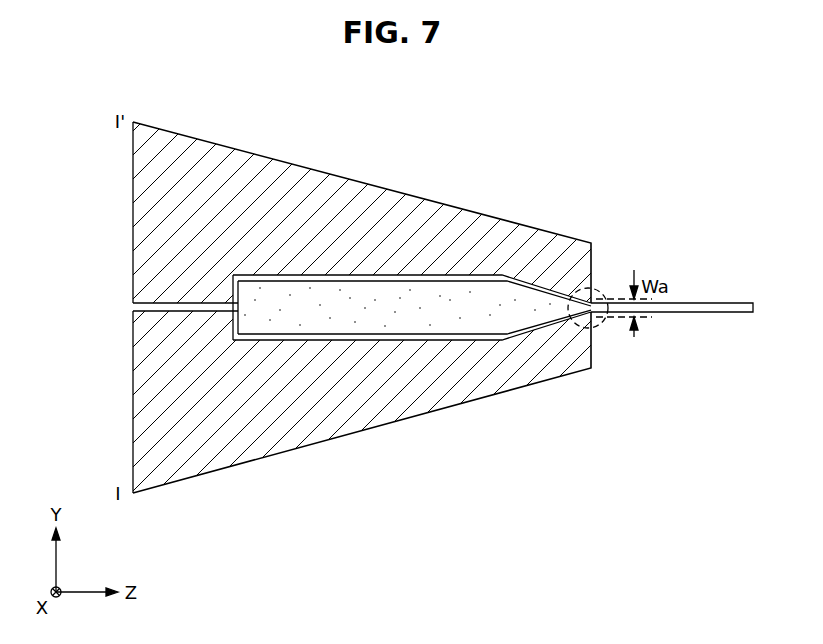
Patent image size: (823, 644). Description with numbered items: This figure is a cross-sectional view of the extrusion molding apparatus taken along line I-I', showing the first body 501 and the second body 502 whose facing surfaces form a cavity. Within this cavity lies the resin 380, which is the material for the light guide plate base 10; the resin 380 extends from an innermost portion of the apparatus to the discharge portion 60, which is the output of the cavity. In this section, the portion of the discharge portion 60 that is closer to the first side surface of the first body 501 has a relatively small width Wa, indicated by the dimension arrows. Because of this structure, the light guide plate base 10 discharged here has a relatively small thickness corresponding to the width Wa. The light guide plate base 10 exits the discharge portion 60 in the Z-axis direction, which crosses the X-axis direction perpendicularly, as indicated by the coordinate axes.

The second body 502 is at (353, 207).
The first body 501 is at (357, 410).
The resin 380 is at (472, 318).
The light guide plate base 10 is at (690, 314).
The discharge portion 60 is at (600, 291).